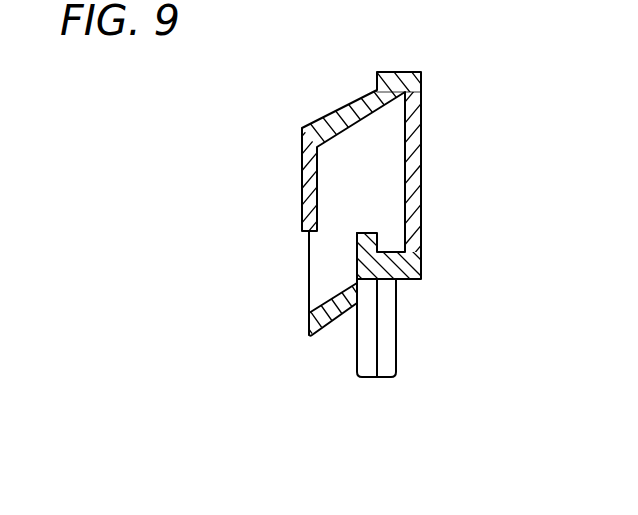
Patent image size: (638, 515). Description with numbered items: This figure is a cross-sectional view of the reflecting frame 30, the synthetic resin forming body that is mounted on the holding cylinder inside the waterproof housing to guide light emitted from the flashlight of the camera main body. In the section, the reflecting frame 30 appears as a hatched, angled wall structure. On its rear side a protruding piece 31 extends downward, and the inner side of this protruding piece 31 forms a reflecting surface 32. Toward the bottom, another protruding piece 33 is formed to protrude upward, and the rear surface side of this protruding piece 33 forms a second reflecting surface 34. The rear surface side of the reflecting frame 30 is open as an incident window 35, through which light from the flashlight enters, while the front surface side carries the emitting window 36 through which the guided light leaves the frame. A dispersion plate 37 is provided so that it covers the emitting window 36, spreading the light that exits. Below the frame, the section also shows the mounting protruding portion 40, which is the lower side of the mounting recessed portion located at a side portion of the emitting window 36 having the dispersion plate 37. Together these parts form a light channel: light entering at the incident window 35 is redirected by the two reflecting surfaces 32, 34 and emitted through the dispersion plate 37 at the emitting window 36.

The reflecting frame 30 is at (322, 120).
The protruding piece 31 is at (310, 250).
The reflecting surface 32 is at (309, 252).
The protruding piece 33 is at (415, 243).
The reflecting surface 34 is at (357, 278).
The incident window 35 is at (309, 297).
The emitting window 36 is at (420, 96).
The dispersion plate 37 is at (413, 185).
The mounting protruding portion 40 is at (397, 342).